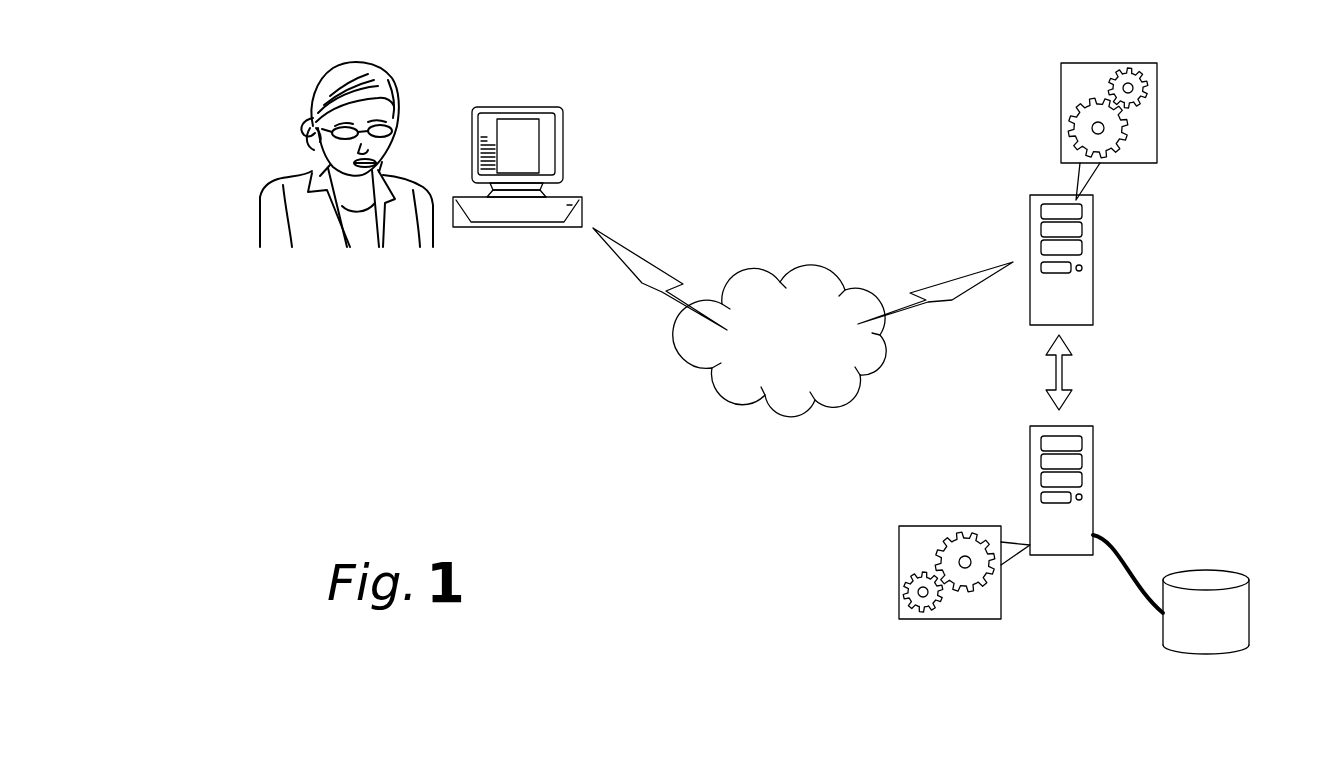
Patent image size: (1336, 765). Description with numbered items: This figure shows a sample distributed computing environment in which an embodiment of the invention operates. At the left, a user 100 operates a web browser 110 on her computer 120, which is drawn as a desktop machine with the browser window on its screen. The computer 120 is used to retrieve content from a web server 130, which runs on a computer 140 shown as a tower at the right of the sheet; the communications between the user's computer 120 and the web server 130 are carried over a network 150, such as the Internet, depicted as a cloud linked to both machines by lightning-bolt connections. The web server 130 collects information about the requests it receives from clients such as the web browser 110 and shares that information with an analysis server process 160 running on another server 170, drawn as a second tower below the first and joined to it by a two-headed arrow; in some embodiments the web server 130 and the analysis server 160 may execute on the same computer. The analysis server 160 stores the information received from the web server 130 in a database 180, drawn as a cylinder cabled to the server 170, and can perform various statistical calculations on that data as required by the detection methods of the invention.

The user 100 is at (283, 179).
The web browser 110 is at (518, 146).
The computer 120 is at (546, 167).
The web server 130 is at (1061, 118).
The computer 140 is at (1094, 316).
The network 150 is at (865, 362).
The analysis server process 160 is at (899, 565).
The server 170 is at (1097, 464).
The database 180 is at (1243, 640).